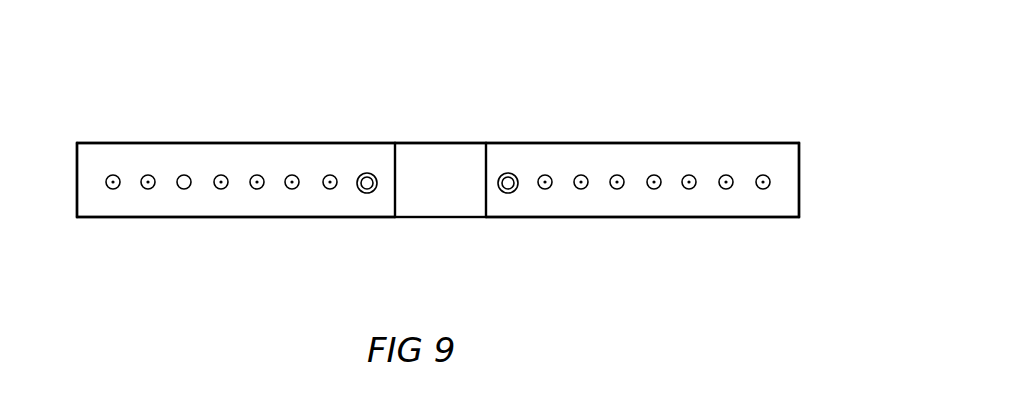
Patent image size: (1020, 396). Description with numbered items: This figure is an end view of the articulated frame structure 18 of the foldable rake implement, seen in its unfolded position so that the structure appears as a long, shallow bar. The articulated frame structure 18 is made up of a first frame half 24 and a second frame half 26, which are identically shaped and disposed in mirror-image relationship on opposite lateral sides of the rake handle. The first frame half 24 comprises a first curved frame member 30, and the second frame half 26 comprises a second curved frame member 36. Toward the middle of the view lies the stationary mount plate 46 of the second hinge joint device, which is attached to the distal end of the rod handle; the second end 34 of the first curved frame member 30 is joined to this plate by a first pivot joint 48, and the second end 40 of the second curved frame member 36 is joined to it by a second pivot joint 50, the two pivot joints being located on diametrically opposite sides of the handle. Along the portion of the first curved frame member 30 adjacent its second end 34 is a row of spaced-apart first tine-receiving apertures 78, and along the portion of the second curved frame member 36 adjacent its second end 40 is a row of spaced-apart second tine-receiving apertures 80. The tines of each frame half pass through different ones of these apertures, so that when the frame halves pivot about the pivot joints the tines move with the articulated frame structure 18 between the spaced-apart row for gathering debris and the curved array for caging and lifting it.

The articulated frame structure 18 is at (804, 90).
The first frame half 24 is at (642, 204).
The second frame half 26 is at (196, 214).
The first curved frame member 30 is at (757, 153).
The second end of the first curved frame member 34 is at (500, 153).
The second curved frame member 36 is at (135, 158).
The second end of the second curved frame member 40 is at (383, 158).
The stationary mount plate 46 is at (441, 157).
The first pivot joint 48 is at (513, 174).
The second pivot joint 50 is at (360, 176).
The first tine-receiving apertures 78 is at (688, 175).
The second tine-receiving apertures 80 is at (186, 175).